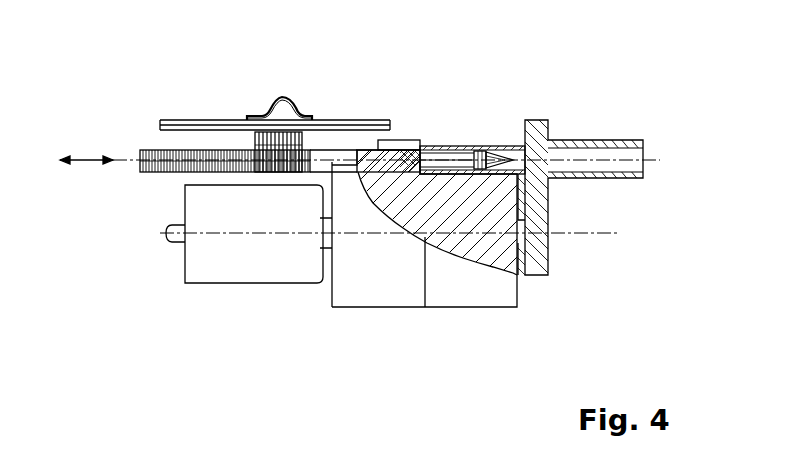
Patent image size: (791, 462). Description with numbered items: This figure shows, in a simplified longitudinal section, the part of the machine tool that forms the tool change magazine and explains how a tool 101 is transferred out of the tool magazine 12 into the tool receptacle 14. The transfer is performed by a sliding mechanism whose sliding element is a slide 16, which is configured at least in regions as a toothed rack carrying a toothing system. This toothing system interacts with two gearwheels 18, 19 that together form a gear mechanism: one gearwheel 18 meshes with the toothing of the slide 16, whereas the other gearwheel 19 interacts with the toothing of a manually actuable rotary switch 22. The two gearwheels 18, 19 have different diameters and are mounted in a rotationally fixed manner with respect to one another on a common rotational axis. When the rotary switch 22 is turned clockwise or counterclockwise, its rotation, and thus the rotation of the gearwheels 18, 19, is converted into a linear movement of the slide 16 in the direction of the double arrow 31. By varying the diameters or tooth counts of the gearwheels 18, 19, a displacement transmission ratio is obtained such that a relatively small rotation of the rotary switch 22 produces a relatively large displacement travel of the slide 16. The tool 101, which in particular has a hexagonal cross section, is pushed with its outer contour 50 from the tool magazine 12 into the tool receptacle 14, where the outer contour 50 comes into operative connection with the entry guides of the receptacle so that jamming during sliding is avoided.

The tool magazine 12 is at (476, 292).
The tool receptacle 14 is at (595, 129).
The slide 16 is at (381, 148).
The gearwheel 18 is at (297, 172).
The gearwheel 19 is at (268, 140).
The rotary switch 22 is at (316, 101).
The double arrow 31 is at (89, 157).
The outer contour 50 is at (440, 141).
The tool 101 is at (463, 152).